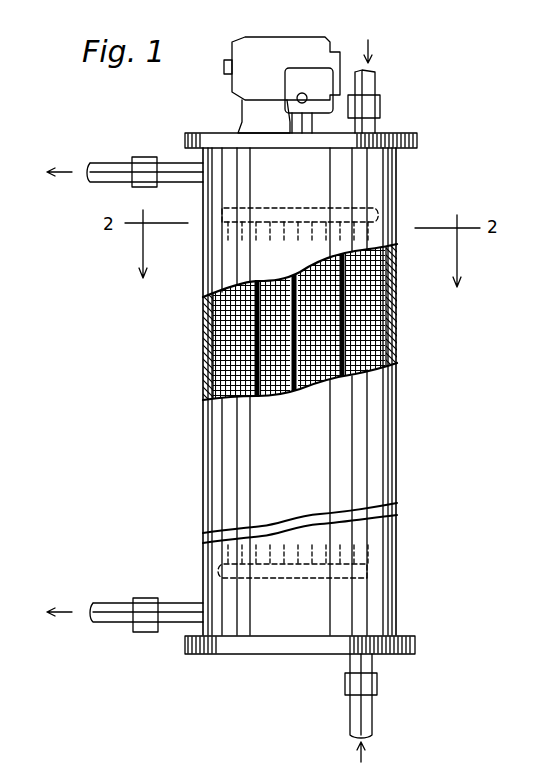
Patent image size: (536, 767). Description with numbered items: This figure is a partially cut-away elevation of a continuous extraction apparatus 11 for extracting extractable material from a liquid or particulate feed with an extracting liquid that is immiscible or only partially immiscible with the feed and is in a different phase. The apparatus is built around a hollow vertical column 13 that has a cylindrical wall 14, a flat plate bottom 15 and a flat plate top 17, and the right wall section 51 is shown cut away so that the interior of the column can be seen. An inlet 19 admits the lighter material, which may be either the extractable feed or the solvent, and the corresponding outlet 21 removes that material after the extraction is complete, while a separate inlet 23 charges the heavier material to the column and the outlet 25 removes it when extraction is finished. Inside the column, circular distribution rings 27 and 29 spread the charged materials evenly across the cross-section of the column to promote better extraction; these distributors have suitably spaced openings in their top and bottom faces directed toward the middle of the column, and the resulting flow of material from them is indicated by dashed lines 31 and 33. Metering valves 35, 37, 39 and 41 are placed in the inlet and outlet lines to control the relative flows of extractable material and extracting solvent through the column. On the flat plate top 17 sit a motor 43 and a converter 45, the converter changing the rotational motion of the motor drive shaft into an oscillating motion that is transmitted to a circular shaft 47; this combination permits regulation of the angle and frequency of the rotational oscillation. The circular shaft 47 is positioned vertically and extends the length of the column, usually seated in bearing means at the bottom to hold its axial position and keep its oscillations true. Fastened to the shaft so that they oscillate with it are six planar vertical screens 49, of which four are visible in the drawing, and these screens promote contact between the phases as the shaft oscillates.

The continuous extraction apparatus 11 is at (410, 356).
The hollow vertical column 13 is at (203, 462).
The cylindrical wall 14 is at (397, 326).
The flat plate bottom 15 is at (244, 655).
The flat plate top 17 is at (415, 133).
The inlet 19 is at (372, 720).
The outlet 21 is at (95, 163).
The inlet 23 is at (376, 82).
The outlet 25 is at (115, 603).
The circular distribution ring 27 is at (304, 578).
The circular distribution ring 29 is at (274, 208).
The dashed lines 31 is at (370, 555).
The dashed lines 33 is at (300, 242).
The metering valve 35 is at (378, 685).
The metering valve 37 is at (147, 157).
The metering valve 39 is at (381, 108).
The metering valve 41 is at (150, 632).
The motor 43 is at (272, 37).
The converter 45 is at (322, 68).
The circular shaft 47 is at (302, 400).
The planar vertical screens 49 is at (212, 374).
The right wall section 51 is at (397, 380).